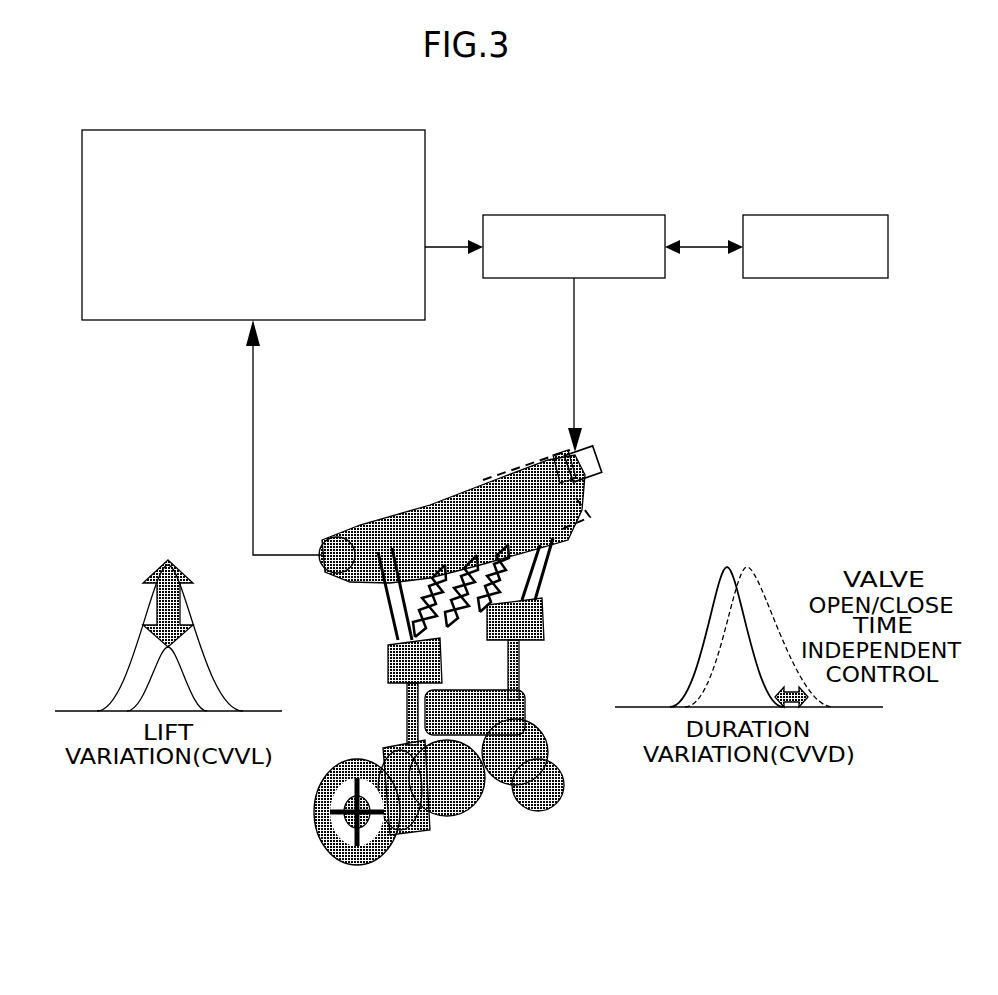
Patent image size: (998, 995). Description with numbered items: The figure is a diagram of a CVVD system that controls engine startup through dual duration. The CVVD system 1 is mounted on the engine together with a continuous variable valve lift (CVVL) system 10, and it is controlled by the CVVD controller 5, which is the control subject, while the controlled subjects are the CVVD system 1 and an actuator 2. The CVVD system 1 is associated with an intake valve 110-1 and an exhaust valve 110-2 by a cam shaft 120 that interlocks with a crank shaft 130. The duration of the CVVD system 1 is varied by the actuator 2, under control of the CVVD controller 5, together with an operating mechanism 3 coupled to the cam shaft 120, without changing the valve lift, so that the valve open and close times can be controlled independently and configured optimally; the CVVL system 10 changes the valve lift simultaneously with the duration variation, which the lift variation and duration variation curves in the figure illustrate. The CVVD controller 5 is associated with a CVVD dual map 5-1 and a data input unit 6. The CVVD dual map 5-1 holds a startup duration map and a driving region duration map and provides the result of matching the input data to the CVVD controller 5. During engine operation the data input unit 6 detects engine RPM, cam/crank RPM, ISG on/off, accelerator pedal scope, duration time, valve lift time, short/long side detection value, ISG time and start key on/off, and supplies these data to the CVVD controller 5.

The CVVD system 1 is at (540, 435).
The actuator 2 is at (565, 452).
The operating mechanism 3 is at (482, 475).
The CVVD controller 5 is at (573, 213).
The CVVD dual map 5-1 is at (813, 213).
The data input unit 6 is at (133, 322).
The continuous variable valve lift (CVVL) system 10 is at (380, 527).
The intake valve 110-1 is at (548, 560).
The exhaust valve 110-2 is at (385, 607).
The cam shaft 120 is at (322, 570).
The crank shaft 130 is at (317, 823).